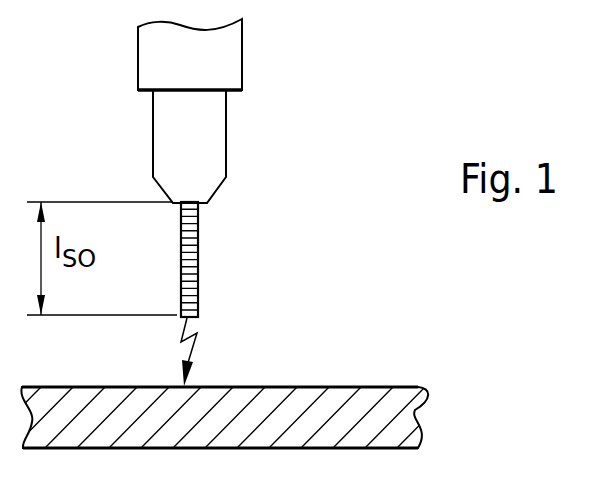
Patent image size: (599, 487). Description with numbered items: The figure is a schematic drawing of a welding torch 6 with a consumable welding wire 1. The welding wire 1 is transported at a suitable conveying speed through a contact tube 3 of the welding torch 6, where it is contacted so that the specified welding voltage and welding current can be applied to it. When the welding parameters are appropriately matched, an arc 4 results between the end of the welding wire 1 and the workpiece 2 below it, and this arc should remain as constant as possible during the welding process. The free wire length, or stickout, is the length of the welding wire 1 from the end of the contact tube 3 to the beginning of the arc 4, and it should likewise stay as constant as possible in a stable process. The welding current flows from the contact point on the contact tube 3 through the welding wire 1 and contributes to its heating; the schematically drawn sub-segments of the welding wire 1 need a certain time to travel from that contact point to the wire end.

The consumable welding wire 1 is at (198, 260).
The workpiece 2 is at (363, 420).
The contact tube 3 is at (226, 133).
The arc 4 is at (197, 333).
The welding torch 6 is at (262, 62).